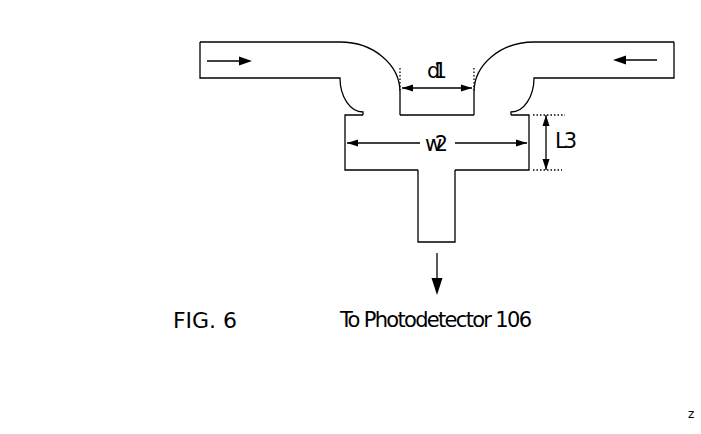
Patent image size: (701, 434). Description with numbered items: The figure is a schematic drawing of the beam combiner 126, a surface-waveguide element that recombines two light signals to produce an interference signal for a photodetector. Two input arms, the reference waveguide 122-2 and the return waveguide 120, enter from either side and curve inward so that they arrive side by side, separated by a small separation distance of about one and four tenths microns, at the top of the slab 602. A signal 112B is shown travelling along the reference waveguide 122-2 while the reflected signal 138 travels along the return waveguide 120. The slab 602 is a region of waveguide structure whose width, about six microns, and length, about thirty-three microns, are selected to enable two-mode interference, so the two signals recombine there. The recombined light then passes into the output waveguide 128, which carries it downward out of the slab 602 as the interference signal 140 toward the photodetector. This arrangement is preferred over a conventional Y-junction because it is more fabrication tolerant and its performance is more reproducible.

The beam combiner 126 is at (130, 47).
The reference waveguide 122-2 is at (273, 42).
The return waveguide 120 is at (600, 42).
The optical signal propagating in second arm 112B is at (215, 62).
The reflected signal 138 is at (645, 61).
The slab 602 is at (345, 133).
The output waveguide 128 is at (455, 212).
The interference signal 140 is at (437, 268).